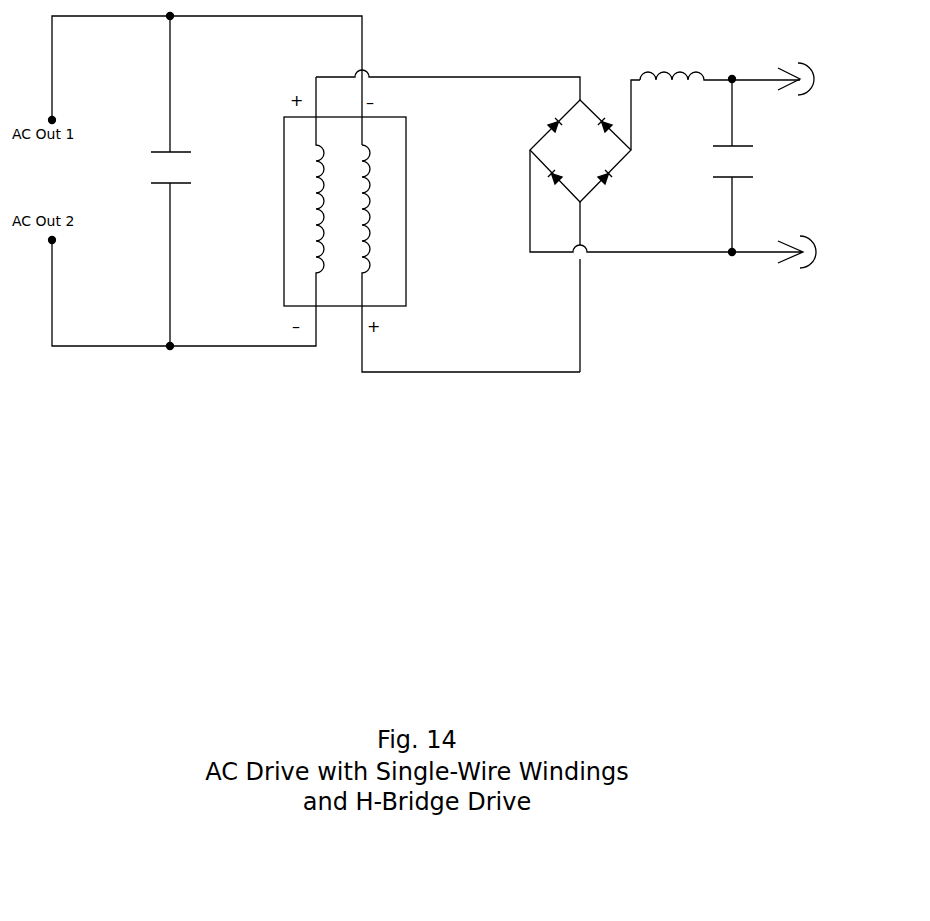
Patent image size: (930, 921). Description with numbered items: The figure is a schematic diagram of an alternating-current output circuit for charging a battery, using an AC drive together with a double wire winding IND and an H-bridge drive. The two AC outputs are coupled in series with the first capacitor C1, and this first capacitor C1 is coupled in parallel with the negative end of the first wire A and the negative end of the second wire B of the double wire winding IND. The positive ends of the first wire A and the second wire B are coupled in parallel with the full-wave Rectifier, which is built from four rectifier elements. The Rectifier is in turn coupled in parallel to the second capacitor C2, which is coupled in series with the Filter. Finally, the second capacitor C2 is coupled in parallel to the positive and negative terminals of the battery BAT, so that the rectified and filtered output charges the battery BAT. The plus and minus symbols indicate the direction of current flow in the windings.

The first capacitor C1 is at (152, 161).
The double wire winding IND is at (413, 224).
The first wire of the double wire winding A is at (311, 191).
The second wire of the double wire winding B is at (462, 258).
The full-wave rectifier Rectifier is at (629, 226).
The filter Filter is at (720, 62).
The second capacitor C2 is at (712, 165).
The battery BAT is at (817, 168).